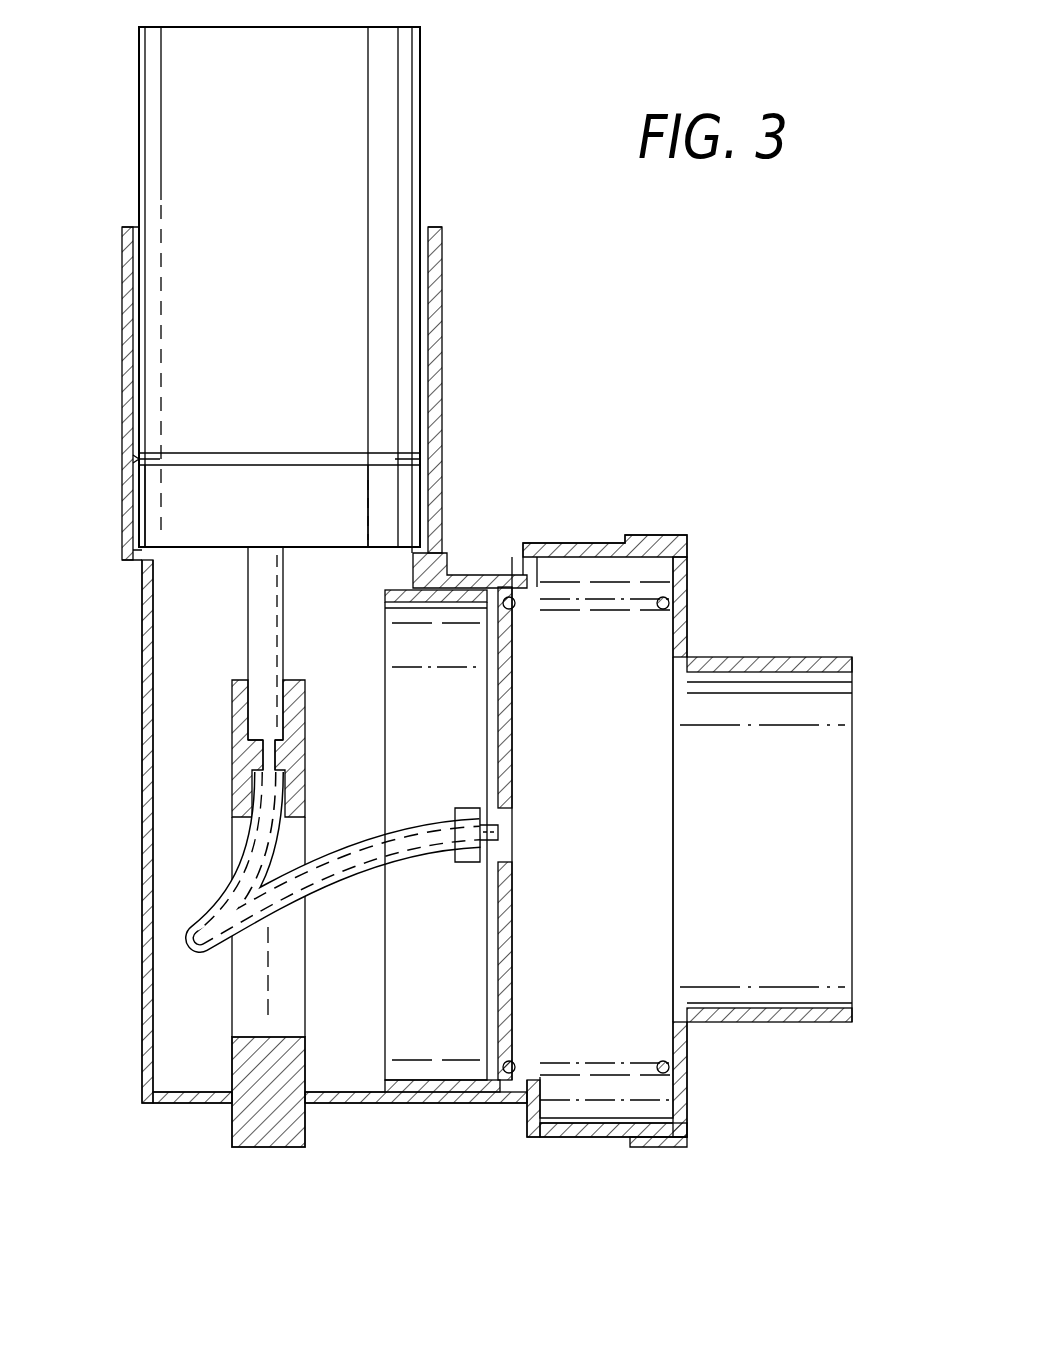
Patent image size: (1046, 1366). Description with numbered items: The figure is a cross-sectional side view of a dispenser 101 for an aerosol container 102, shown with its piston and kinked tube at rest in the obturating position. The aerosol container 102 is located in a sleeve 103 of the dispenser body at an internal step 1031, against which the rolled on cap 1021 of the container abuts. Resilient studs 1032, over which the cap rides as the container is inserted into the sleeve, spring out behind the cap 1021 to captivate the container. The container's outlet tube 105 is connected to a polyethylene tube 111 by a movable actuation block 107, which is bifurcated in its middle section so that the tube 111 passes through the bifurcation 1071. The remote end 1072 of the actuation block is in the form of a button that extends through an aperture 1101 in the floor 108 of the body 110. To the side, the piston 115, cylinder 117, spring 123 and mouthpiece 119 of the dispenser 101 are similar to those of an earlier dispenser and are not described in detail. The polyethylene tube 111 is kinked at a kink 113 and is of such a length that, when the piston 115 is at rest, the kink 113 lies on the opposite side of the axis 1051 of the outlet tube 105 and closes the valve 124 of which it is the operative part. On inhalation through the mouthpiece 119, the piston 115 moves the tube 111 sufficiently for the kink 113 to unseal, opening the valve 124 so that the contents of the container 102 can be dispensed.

The dispenser 101 is at (600, 384).
The aerosol container 102 is at (345, 140).
The sleeve 103 is at (443, 289).
The rolled on cap 1021 is at (385, 517).
The internal step 1031 is at (133, 562).
The resilient studs 1032 is at (135, 460).
The outlet tube 105 is at (258, 655).
The actuation block 107 is at (240, 760).
The floor 108 is at (215, 1103).
The housing 110 is at (178, 1103).
The polyethylene tube 111 is at (235, 890).
The kink 113 is at (185, 958).
The piston 115 is at (515, 935).
The cylinder 117 is at (512, 602).
The mouthpiece 119 is at (815, 1005).
The spring 123 is at (597, 1075).
The valve 124 is at (308, 842).
The axis 1051 is at (270, 1005).
The bifurcation 1071 is at (240, 1010).
The remote end 1072 is at (270, 1147).
The aperture 1101 is at (318, 1103).